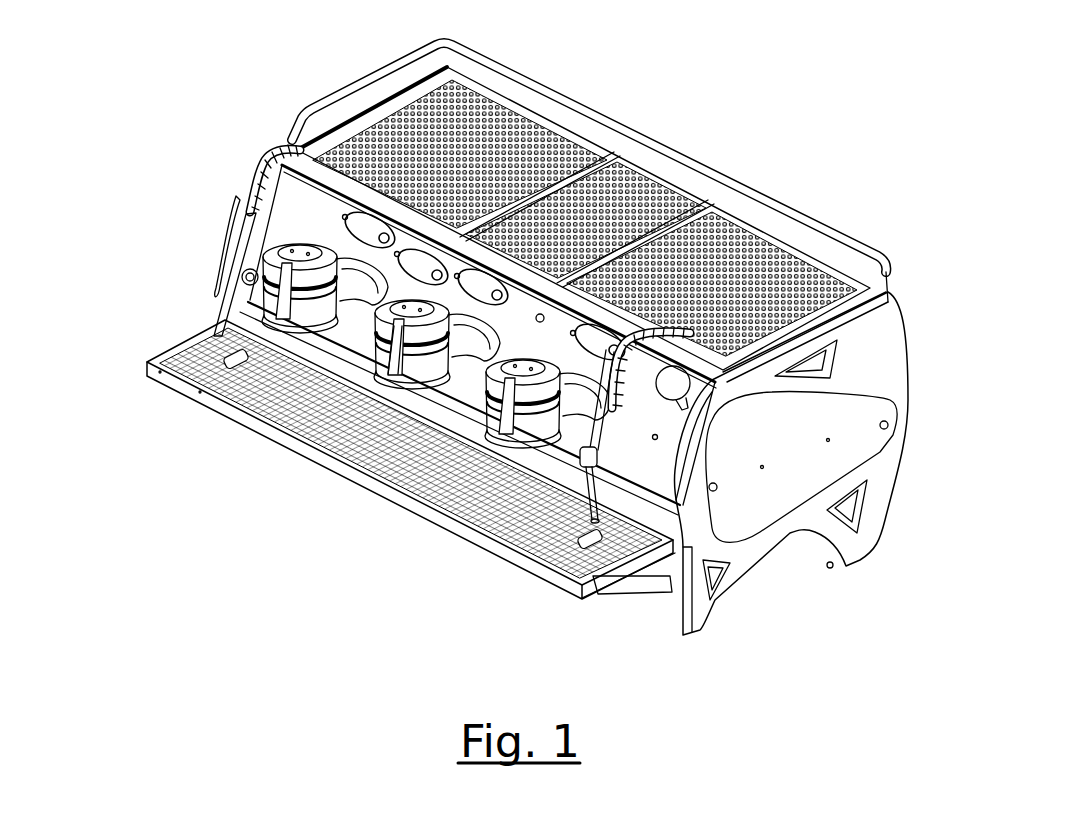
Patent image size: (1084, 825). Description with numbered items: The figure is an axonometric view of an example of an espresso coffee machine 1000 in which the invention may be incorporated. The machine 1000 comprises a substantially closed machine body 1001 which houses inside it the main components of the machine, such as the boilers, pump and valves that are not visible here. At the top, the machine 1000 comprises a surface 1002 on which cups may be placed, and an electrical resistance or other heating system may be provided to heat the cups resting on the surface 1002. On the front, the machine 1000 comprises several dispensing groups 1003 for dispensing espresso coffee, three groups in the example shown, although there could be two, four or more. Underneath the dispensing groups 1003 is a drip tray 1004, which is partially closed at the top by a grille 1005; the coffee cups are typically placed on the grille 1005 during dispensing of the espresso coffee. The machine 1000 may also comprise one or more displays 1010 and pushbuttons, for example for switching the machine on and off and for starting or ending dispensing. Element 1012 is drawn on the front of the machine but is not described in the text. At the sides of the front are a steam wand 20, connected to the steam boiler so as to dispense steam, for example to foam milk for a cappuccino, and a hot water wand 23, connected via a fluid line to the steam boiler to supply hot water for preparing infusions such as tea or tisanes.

The espresso coffee machine 1000 is at (727, 104).
The machine body 1001 is at (853, 374).
The surface 1002 is at (357, 127).
The dispensing group 1003 is at (266, 242).
The drip tray 1004 is at (177, 397).
The grille 1005 is at (187, 353).
The display 1010 is at (253, 198).
The dispensing spout 1012 is at (440, 384).
The steam wand 20 is at (605, 472).
The hot water wand 23 is at (585, 442).